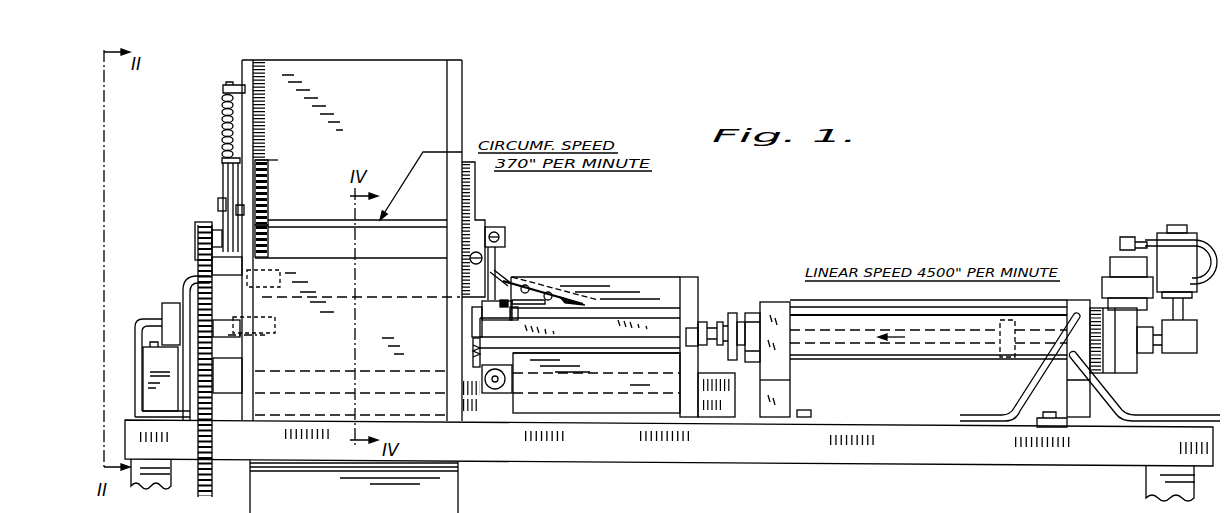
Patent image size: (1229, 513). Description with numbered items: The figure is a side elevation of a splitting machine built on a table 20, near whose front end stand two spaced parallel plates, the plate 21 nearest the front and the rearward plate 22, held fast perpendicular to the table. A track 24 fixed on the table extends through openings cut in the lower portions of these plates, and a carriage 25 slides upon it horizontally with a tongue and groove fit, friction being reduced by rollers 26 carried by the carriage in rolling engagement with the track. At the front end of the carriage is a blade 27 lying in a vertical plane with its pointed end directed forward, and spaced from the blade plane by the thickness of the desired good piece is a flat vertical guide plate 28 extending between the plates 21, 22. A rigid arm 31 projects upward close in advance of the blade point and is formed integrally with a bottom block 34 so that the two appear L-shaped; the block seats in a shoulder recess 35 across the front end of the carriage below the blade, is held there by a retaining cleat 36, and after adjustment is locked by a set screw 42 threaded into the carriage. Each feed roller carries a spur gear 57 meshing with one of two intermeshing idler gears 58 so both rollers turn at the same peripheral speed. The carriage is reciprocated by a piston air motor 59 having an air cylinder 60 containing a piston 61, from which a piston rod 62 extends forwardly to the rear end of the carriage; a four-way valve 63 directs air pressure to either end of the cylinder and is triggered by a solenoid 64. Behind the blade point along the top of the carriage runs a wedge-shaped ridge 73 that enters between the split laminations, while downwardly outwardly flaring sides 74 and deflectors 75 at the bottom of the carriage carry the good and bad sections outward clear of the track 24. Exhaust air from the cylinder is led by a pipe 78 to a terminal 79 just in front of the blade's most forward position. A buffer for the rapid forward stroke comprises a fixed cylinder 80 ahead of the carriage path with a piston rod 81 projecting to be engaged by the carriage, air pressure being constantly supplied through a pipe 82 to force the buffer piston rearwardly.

The table 20 is at (1022, 458).
The plate 21 is at (255, 61).
The plate 22 is at (454, 66).
The track 24 is at (717, 413).
The carriage 25 is at (700, 288).
The rollers 26 is at (492, 394).
The blade 27 is at (500, 282).
The guide plate 28 is at (433, 90).
The rigid arm 31 is at (470, 308).
The bottom block 34 is at (505, 325).
The shoulder recess 35 is at (517, 310).
The retaining cleat 36 is at (473, 337).
The set screw 42 is at (540, 285).
The spur gear 57 is at (268, 238).
The idler gears 58 is at (270, 189).
The piston air motor 59 is at (777, 296).
The air cylinder 60 is at (920, 360).
The piston 61 is at (993, 360).
The piston rod 62 is at (713, 324).
The four-way valve 63 is at (1145, 368).
The solenoid 64 is at (1115, 268).
The wedge-shaped ridge 73 is at (652, 283).
The flaring sides 74 is at (628, 315).
The deflectors 75 is at (604, 400).
The pipe 78 is at (187, 287).
The terminal 79 is at (198, 247).
The fixed cylinder 80 is at (168, 310).
The piston rod 81 is at (262, 336).
The pipe 82 is at (133, 373).